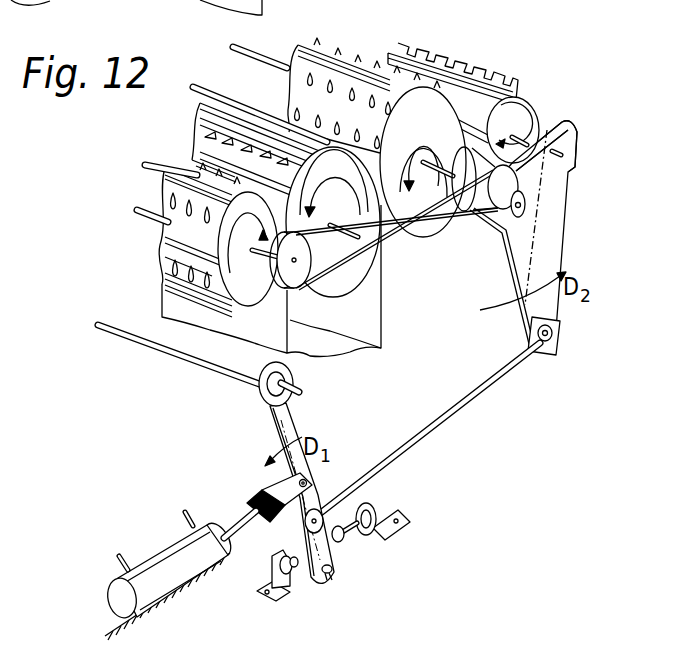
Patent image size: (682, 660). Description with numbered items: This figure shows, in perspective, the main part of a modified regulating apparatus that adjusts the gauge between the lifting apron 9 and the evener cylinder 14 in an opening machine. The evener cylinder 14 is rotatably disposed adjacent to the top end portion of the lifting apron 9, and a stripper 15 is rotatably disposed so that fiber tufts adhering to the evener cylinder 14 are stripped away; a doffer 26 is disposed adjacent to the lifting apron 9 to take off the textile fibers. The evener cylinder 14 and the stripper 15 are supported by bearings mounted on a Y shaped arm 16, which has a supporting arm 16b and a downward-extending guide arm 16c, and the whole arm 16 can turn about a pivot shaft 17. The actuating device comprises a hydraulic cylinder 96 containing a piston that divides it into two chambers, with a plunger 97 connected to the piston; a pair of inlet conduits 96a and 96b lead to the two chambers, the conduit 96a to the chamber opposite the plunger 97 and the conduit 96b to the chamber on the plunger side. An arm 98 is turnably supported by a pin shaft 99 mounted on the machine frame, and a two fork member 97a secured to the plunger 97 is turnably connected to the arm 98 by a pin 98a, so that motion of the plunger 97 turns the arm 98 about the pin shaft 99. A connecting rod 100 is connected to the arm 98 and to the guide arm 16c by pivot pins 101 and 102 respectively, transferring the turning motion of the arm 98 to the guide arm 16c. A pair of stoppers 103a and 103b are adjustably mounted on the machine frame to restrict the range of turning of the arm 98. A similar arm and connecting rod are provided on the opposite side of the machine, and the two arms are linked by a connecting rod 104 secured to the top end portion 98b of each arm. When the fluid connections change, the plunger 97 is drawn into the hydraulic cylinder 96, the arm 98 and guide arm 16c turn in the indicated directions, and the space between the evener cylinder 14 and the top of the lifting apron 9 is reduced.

The lifting apron 9 is at (381, 297).
The evener cylinder 14 is at (318, 70).
The stripper 15 is at (520, 110).
The Y shaped arm 16 is at (517, 241).
The supporting arm 16b is at (569, 140).
The guide arm 16c is at (536, 245).
The pivot shaft 17 is at (526, 206).
The doffer 26 is at (164, 260).
The hydraulic cylinder 96 is at (183, 586).
The inlet conduit 96a is at (129, 553).
The inlet conduit 96b is at (189, 508).
The plunger 97 is at (230, 522).
The two fork member 97a is at (256, 488).
The arm 98 is at (292, 422).
The pin 98a is at (307, 480).
The top end portion of the arm 98b is at (288, 378).
The pin shaft 99 is at (333, 578).
The connecting rod 100 is at (466, 400).
The pivot pin 101 is at (329, 536).
The pivot pin 102 is at (552, 334).
The stopper 103a is at (382, 504).
The stopper 103b is at (288, 592).
The connecting rod 104 is at (158, 352).